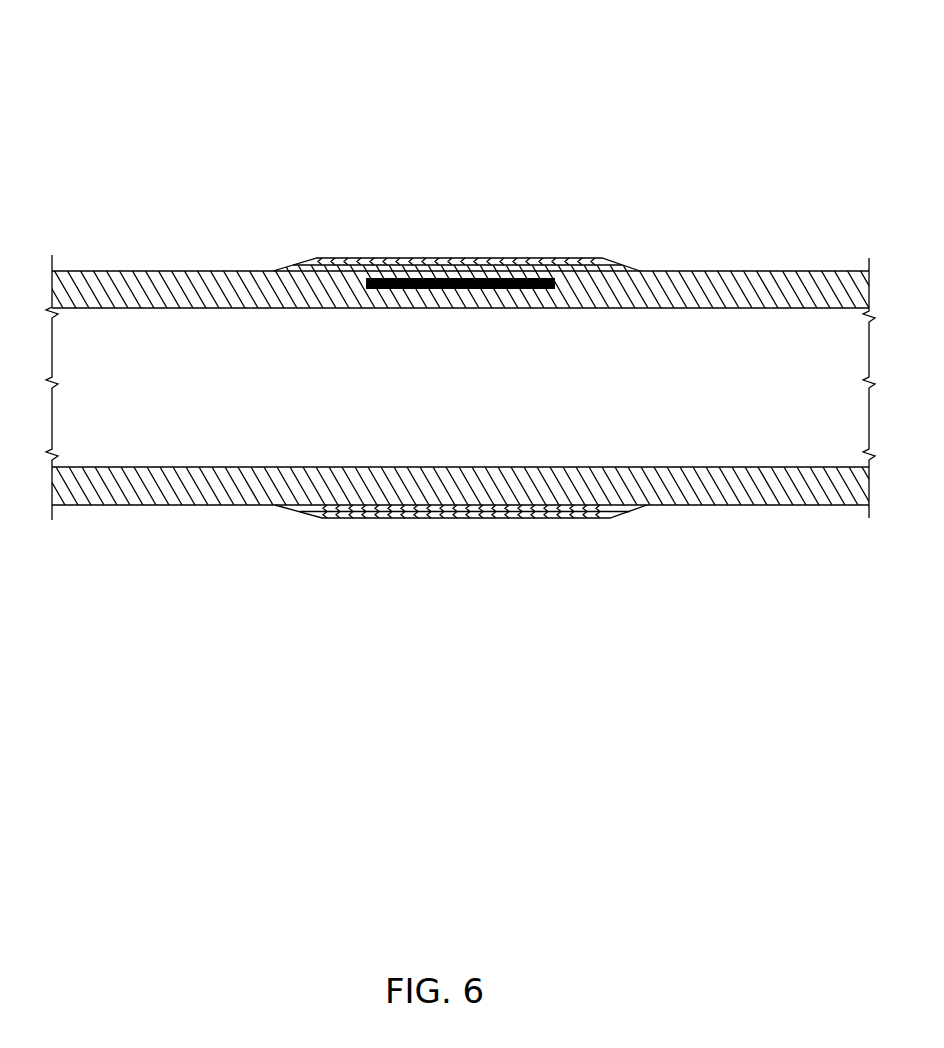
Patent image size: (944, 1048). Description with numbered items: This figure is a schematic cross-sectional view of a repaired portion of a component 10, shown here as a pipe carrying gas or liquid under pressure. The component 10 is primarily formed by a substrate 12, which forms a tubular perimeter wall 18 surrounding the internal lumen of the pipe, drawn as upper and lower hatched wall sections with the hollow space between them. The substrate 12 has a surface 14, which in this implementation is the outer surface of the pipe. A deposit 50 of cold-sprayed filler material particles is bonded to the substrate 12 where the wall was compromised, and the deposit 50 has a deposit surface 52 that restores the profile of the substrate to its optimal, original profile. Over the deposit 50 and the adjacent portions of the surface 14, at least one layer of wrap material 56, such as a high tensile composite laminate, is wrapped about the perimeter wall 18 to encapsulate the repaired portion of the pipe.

The component 10 is at (716, 98).
The substrate 12 is at (107, 271).
The surface 14 is at (175, 271).
The perimeter wall 18 is at (153, 487).
The deposit 50 is at (432, 268).
The deposit surface 52 is at (487, 265).
The wrap material 56 is at (545, 258).